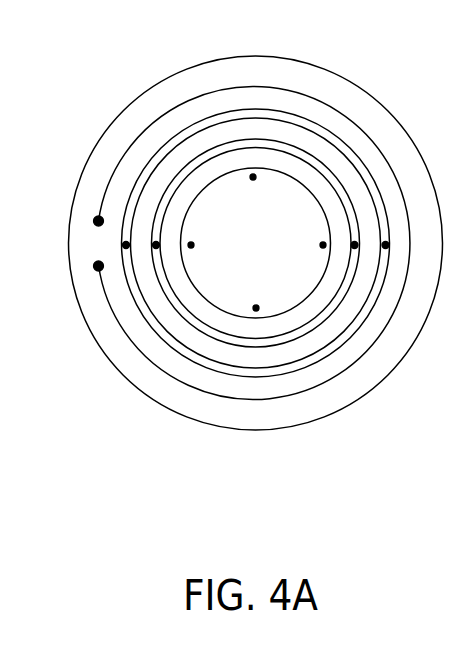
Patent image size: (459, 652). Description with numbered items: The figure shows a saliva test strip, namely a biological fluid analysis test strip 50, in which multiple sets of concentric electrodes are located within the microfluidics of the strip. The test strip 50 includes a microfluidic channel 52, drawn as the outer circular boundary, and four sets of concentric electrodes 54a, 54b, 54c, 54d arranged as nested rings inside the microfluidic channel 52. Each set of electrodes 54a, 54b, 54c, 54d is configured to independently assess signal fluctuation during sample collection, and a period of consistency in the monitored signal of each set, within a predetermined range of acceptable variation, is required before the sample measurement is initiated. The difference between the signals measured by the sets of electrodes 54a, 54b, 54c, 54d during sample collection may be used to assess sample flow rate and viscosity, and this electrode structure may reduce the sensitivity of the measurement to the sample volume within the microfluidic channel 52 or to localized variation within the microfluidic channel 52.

The biological fluid analysis test strip 50 is at (237, 242).
The microfluidic channel 52 is at (103, 153).
The set of concentric electrodes 54a is at (250, 84).
The set of concentric electrodes 54b is at (292, 112).
The set of concentric electrodes 54c is at (230, 146).
The set of concentric electrodes 54d is at (322, 210).